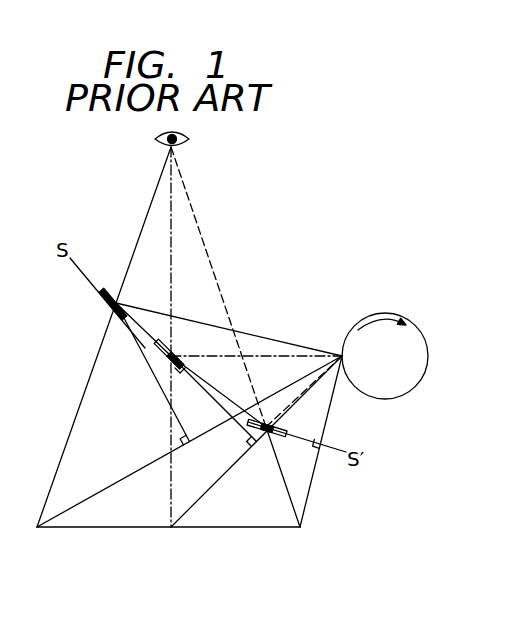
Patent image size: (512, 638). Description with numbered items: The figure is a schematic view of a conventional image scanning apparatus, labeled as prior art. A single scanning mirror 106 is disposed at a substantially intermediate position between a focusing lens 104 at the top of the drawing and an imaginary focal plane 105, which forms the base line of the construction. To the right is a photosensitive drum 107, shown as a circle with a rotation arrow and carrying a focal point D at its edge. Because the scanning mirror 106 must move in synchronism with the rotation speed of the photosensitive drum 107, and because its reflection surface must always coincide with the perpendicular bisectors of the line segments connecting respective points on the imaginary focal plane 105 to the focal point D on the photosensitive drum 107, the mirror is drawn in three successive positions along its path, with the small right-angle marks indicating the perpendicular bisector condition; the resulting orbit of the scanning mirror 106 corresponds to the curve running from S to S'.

The focusing lens 104 is at (191, 138).
The imaginary focal plane 105 is at (168, 551).
The scanning mirror 106 is at (108, 302).
The photosensitive drum 107 is at (402, 316).